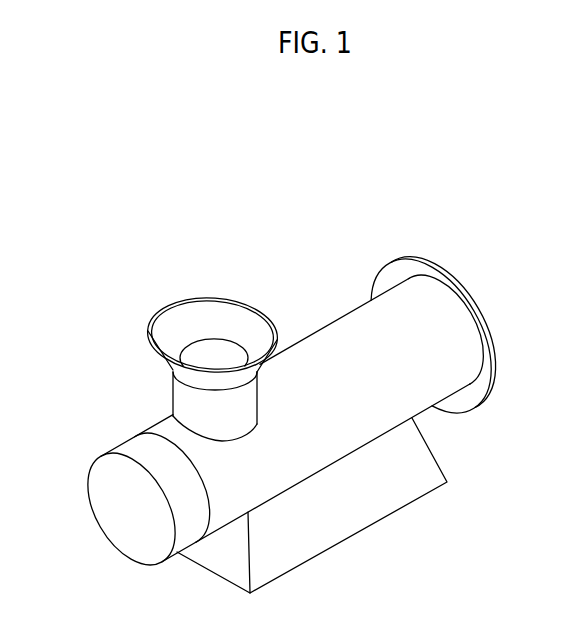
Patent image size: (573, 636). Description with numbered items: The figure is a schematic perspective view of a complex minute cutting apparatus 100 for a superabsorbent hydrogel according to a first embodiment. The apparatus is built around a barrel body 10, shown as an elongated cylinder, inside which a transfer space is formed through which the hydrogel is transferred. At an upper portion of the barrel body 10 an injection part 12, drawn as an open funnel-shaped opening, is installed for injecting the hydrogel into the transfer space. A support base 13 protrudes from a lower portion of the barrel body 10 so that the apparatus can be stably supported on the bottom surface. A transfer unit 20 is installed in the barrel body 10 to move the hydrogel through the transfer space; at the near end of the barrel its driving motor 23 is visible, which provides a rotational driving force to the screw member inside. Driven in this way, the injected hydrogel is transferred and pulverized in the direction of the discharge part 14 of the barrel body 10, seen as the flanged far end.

The complex minute cutting apparatus 100 is at (203, 244).
The barrel body 10 is at (322, 340).
The injection part 12 is at (152, 347).
The support base 13 is at (327, 540).
The discharge part 14 is at (473, 290).
The transfer unit 20 is at (72, 546).
The driving motor 23 is at (130, 547).